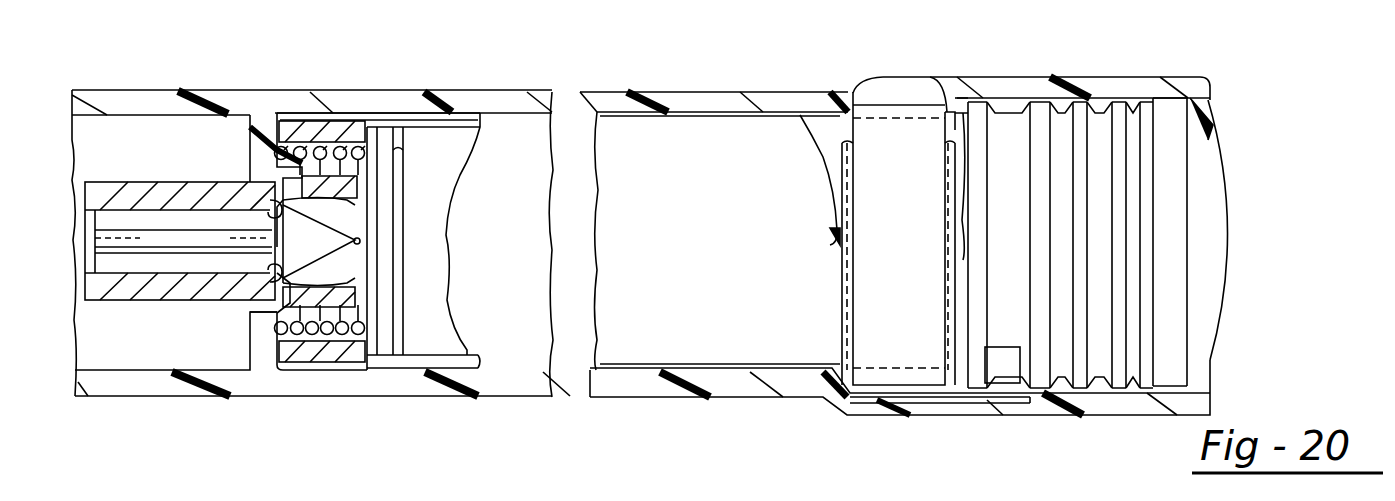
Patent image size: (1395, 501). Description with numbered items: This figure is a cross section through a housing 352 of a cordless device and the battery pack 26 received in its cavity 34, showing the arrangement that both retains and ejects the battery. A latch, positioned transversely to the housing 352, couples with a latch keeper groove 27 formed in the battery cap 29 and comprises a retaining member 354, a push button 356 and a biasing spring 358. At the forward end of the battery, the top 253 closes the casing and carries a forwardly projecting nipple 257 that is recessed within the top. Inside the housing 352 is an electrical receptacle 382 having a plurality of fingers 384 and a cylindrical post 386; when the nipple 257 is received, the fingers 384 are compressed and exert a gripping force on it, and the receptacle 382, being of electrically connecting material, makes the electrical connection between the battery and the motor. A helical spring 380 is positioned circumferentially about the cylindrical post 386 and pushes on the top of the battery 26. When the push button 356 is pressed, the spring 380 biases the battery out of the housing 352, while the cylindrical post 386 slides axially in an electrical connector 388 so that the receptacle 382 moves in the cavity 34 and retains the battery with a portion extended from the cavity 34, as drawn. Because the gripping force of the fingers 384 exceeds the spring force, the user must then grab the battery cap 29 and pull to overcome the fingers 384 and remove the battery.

The battery pack 26 is at (710, 150).
The latch keeper groove 27 is at (1030, 113).
The battery cap 29 is at (1213, 227).
The cavity 34 is at (1213, 108).
The top 253 is at (278, 135).
The projecting nipple 257 is at (357, 125).
The housing 352 is at (676, 100).
The retaining member 354 is at (865, 328).
The push button 356 is at (873, 85).
The biasing spring 358 is at (927, 400).
The spring 380 is at (332, 176).
The electrical receptacle 382 is at (256, 287).
The fingers 384 is at (357, 283).
The cylindrical post 386 is at (141, 290).
The electrical connector 388 is at (108, 292).